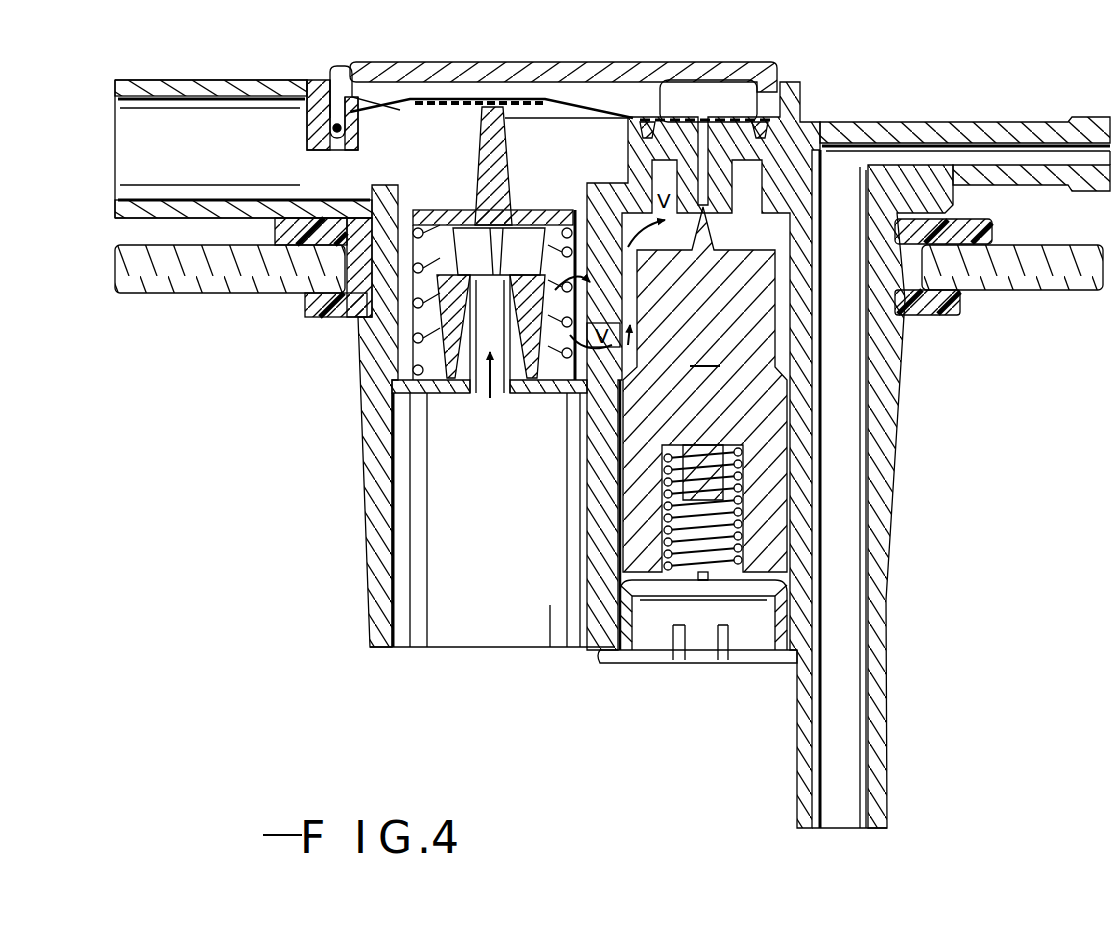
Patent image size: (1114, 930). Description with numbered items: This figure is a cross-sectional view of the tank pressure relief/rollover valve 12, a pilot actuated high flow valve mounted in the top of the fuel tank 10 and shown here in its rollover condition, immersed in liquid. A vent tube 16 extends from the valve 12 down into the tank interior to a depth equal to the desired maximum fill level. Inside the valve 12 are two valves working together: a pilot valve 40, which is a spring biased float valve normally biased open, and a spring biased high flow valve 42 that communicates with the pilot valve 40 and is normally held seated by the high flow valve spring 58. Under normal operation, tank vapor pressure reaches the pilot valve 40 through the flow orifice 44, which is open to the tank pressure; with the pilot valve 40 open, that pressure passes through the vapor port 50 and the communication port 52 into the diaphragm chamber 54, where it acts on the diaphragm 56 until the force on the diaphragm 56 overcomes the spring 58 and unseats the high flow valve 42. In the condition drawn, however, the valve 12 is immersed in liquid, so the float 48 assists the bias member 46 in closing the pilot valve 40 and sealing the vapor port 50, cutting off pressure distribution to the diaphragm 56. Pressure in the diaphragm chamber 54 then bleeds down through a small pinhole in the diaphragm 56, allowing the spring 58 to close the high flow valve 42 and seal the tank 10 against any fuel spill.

The fuel tank 10 is at (998, 290).
The tank pressure relief/rollover valve 12 is at (368, 563).
The vent tube 16 is at (852, 478).
The pilot valve 40 is at (742, 231).
The high flow valve 42 is at (508, 243).
The flow orifice 44 is at (500, 384).
The bias member 46 is at (670, 540).
The float 48 is at (705, 389).
The vapor port 50 is at (710, 150).
The communication port 52 is at (645, 122).
The diaphragm chamber 54 is at (612, 97).
The diaphragm 56 is at (345, 118).
The high flow valve spring 58 is at (414, 306).